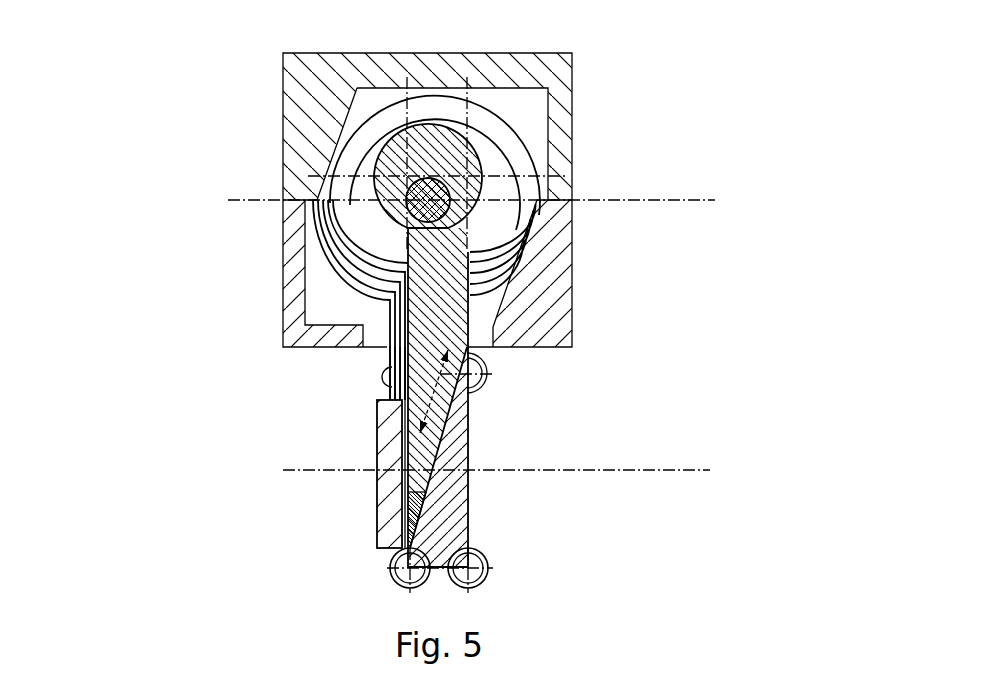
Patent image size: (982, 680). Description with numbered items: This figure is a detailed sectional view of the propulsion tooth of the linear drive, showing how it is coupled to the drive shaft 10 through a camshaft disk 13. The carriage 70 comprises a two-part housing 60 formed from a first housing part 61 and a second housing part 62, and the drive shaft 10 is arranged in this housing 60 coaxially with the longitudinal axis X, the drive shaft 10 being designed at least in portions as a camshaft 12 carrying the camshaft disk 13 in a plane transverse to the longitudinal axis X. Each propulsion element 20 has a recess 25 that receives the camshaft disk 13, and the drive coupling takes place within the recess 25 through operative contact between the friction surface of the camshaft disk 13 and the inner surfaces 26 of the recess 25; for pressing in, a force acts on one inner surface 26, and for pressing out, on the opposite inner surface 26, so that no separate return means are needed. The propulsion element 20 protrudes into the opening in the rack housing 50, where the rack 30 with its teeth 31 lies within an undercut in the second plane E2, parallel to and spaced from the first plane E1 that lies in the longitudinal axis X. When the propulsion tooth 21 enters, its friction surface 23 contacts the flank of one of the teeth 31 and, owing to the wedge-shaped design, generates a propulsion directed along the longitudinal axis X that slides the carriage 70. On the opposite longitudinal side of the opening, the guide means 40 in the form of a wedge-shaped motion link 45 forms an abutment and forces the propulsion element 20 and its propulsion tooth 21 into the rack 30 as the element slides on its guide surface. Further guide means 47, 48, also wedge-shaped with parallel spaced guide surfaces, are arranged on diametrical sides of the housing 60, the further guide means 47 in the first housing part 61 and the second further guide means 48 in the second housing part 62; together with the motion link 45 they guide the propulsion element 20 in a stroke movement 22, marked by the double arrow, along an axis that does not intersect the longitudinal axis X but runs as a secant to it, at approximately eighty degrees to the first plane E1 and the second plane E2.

The drive shaft 10 is at (395, 142).
The camshaft 12 is at (405, 190).
The camshaft disk 13 is at (334, 178).
The propulsion element 20 is at (478, 305).
The propulsion tooth 21 is at (443, 435).
The movement 22 is at (390, 390).
The friction surface 23 is at (380, 442).
The recess 25 is at (487, 143).
The inner surface 26 is at (472, 137).
The rack 30 is at (408, 497).
The tooth 31 is at (345, 520).
The guide means 40 is at (453, 535).
The motion link 45 is at (509, 539).
The further guide means 47 is at (333, 98).
The second further guide means 48 is at (525, 275).
The rack housing 50 is at (383, 455).
The housing 60 is at (196, 108).
The first housing part 61 is at (557, 88).
The second housing part 62 is at (293, 287).
The carriage 70 is at (383, 179).
The longitudinal axis X is at (428, 178).
The first plane E1 is at (698, 202).
The second plane E2 is at (615, 472).